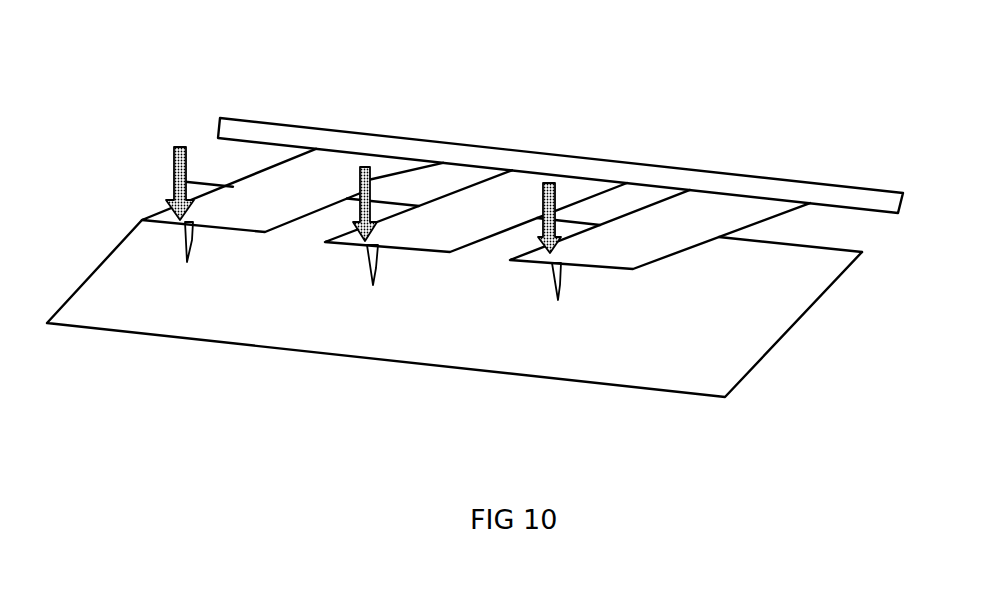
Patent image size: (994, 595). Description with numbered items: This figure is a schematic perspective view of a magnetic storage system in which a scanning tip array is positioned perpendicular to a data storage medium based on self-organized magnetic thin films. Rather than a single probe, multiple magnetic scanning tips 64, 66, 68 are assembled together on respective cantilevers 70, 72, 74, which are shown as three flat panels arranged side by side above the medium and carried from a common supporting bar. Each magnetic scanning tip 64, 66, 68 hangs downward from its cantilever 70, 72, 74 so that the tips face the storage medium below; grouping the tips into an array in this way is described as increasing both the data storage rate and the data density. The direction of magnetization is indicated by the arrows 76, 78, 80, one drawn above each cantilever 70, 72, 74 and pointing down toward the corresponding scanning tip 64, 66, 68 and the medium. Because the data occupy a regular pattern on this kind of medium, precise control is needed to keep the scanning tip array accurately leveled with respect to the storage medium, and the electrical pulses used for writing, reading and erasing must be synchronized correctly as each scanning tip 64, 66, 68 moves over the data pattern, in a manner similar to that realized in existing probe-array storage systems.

The magnetic scanning tip 64 is at (185, 247).
The magnetic scanning tip 66 is at (368, 268).
The magnetic scanning tip 68 is at (552, 287).
The cantilever 70 is at (283, 184).
The cantilever 72 is at (494, 193).
The cantilever 74 is at (700, 214).
The magnetization arrow 76 is at (173, 166).
The magnetization arrow 78 is at (372, 170).
The magnetization arrow 80 is at (566, 193).